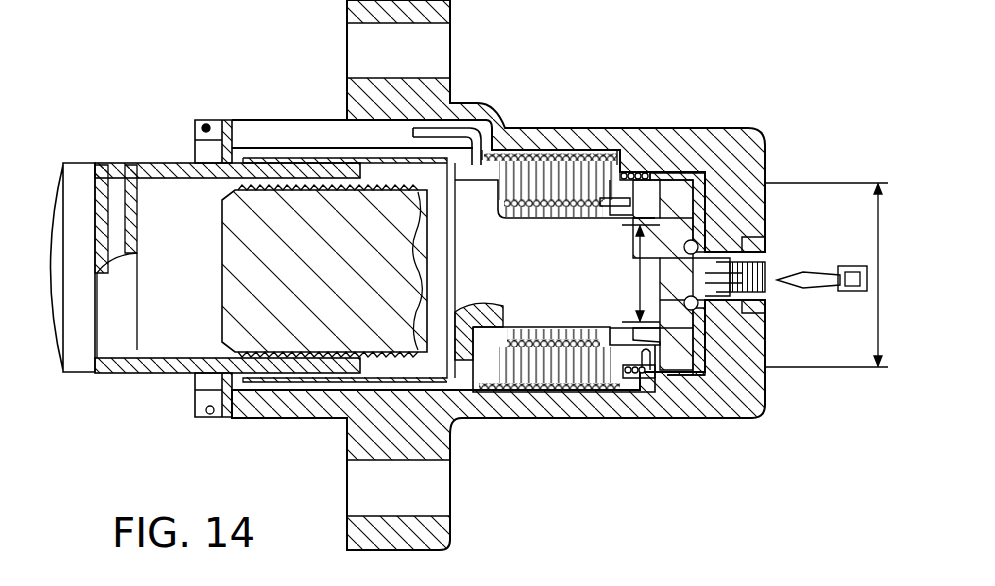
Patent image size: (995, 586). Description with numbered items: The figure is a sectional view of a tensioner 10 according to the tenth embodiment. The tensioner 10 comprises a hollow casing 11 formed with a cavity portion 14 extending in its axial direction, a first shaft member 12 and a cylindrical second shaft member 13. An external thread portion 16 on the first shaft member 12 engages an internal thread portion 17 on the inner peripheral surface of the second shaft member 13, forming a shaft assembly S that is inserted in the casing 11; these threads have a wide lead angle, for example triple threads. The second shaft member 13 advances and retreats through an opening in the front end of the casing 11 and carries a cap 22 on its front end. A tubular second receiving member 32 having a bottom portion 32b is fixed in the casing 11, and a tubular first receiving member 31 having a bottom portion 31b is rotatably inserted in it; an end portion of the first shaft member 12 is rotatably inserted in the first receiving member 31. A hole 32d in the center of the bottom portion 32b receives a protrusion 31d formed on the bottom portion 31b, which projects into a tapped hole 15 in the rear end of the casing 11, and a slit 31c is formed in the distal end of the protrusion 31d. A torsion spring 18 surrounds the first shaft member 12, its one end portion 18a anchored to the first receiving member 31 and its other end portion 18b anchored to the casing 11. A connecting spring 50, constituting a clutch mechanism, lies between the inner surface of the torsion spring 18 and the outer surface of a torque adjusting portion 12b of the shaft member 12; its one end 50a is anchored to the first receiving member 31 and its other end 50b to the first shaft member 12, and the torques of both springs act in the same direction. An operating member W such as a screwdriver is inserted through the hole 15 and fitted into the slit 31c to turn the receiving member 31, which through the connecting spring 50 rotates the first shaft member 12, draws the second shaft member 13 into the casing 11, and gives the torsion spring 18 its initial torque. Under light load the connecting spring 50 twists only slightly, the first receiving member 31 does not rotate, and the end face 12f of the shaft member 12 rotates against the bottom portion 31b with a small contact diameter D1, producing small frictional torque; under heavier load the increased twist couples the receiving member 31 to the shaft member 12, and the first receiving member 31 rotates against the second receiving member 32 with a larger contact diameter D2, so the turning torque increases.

The tensioner 10 is at (93, 83).
The casing 11 is at (512, 420).
The first shaft member 12 is at (437, 330).
The torque adjusting portion 12b is at (558, 330).
The end face 12f is at (715, 400).
The second shaft member 13 is at (150, 163).
The cavity portion 14 is at (298, 150).
The tapped hole 15 is at (755, 245).
The external thread portion 16 is at (252, 400).
The internal thread portion 17 is at (312, 383).
The torsion spring 18 is at (528, 157).
The one end portion of the torsion spring 18a is at (642, 372).
The other end portion of the torsion spring 18b is at (443, 133).
The cap 22 is at (52, 203).
The first receiving member 31 is at (667, 378).
The bottom portion of the first receiving member 31b is at (673, 223).
The slit 31c is at (750, 287).
The protrusion 31d is at (743, 255).
The second receiving member 32 is at (760, 378).
The bottom portion of the second receiving member 32b is at (720, 190).
The hole 32d is at (750, 323).
The connecting spring 50 is at (563, 203).
The one end of the connecting spring 50a is at (625, 174).
The other end of the connecting spring 50b is at (487, 386).
The shaft assembly S is at (178, 386).
The contact diameter D1 is at (633, 273).
The contact diameter D2 is at (877, 230).
The operating member W is at (813, 288).